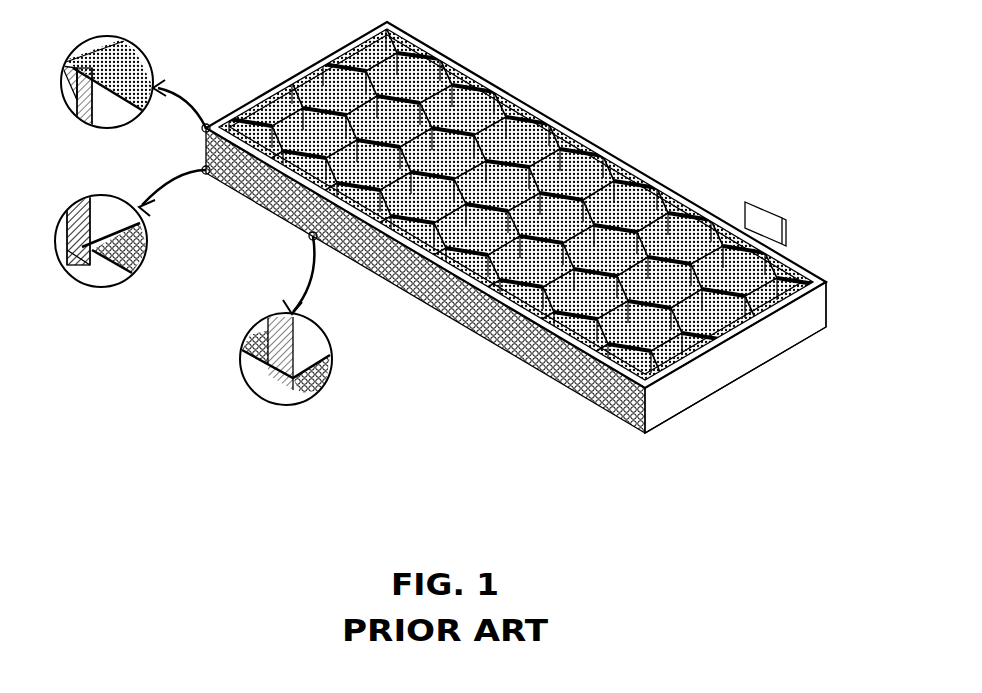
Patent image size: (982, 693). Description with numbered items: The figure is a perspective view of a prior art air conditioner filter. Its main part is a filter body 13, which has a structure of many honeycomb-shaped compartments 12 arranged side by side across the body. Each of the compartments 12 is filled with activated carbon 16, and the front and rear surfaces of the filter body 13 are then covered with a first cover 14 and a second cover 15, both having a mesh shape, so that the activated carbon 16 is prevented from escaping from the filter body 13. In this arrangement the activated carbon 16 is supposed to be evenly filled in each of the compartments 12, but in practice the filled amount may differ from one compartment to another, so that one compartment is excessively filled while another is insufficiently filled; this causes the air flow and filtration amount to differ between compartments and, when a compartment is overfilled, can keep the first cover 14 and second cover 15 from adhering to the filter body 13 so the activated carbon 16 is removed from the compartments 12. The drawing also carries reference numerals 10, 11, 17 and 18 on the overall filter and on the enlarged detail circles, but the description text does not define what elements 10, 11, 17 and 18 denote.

The honeycomb panel body 10 is at (66, 103).
The cell wall 11 is at (243, 362).
The compartments 12 is at (690, 370).
The filter body 13 is at (773, 369).
The first cover 14 is at (110, 268).
The second cover 15 is at (112, 108).
The activated carbon 16 is at (540, 373).
The hatched layer 17 is at (60, 250).
The hatched layer 18 is at (270, 400).